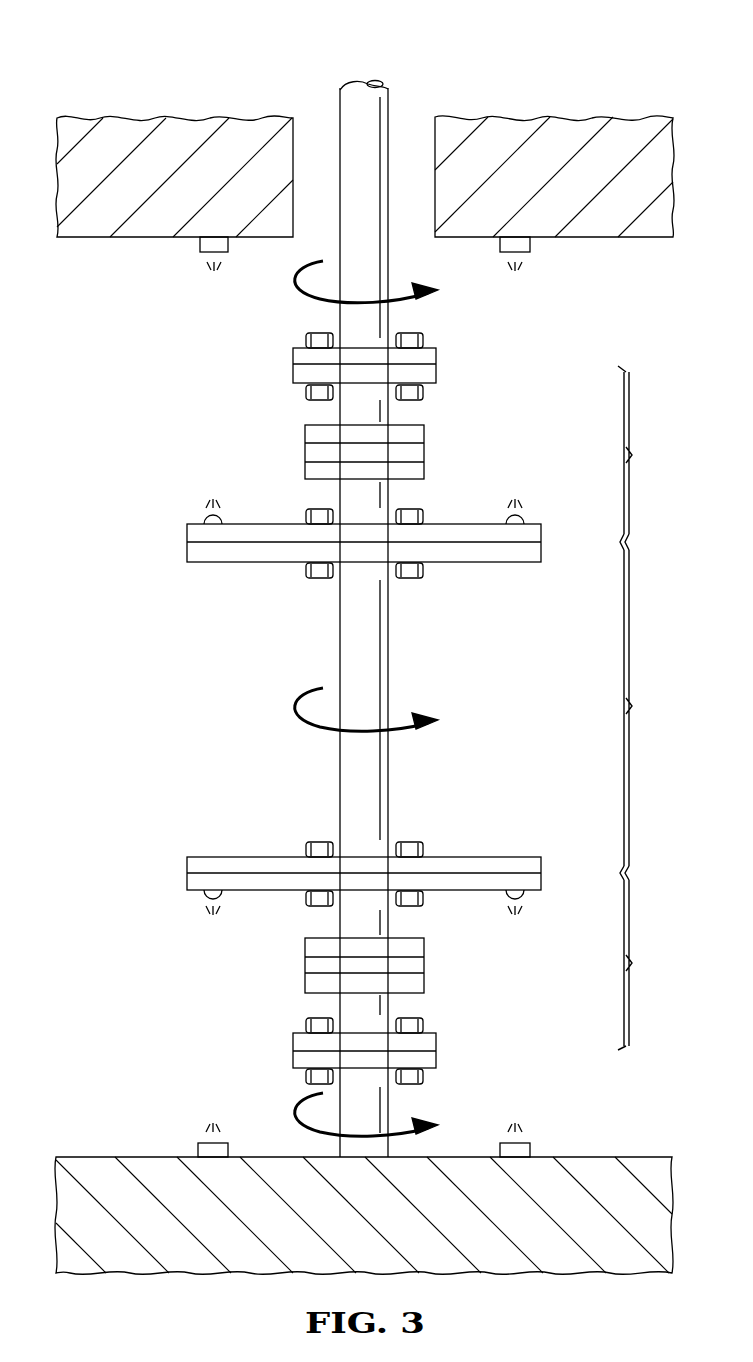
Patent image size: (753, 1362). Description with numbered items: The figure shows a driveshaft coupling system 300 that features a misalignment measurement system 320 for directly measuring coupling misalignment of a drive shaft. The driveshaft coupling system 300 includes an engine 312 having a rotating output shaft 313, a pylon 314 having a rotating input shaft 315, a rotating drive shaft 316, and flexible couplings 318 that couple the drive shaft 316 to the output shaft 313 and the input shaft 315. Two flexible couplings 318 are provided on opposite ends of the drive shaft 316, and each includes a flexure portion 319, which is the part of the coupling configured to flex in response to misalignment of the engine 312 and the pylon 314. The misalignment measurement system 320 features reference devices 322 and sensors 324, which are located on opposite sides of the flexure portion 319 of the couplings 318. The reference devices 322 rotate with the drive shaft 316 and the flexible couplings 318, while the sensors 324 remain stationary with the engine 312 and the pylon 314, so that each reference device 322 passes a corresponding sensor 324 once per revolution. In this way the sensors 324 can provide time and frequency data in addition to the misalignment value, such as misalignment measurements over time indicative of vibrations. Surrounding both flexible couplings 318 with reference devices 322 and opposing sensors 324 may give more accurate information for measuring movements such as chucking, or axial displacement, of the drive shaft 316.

The driveshaft coupling system 300 is at (605, 70).
The engine 312 is at (387, 1231).
The rotating output shaft 313 is at (388, 1113).
The pylon 314 is at (197, 193).
The rotating input shaft 315 is at (340, 92).
The rotating drive shaft 316 is at (489, 708).
The flexible couplings 318 is at (436, 708).
The flexure portion 319 is at (305, 452).
The misalignment measurement system 320 is at (180, 300).
The reference devices 322 is at (204, 520).
The sensors 324 is at (200, 245).